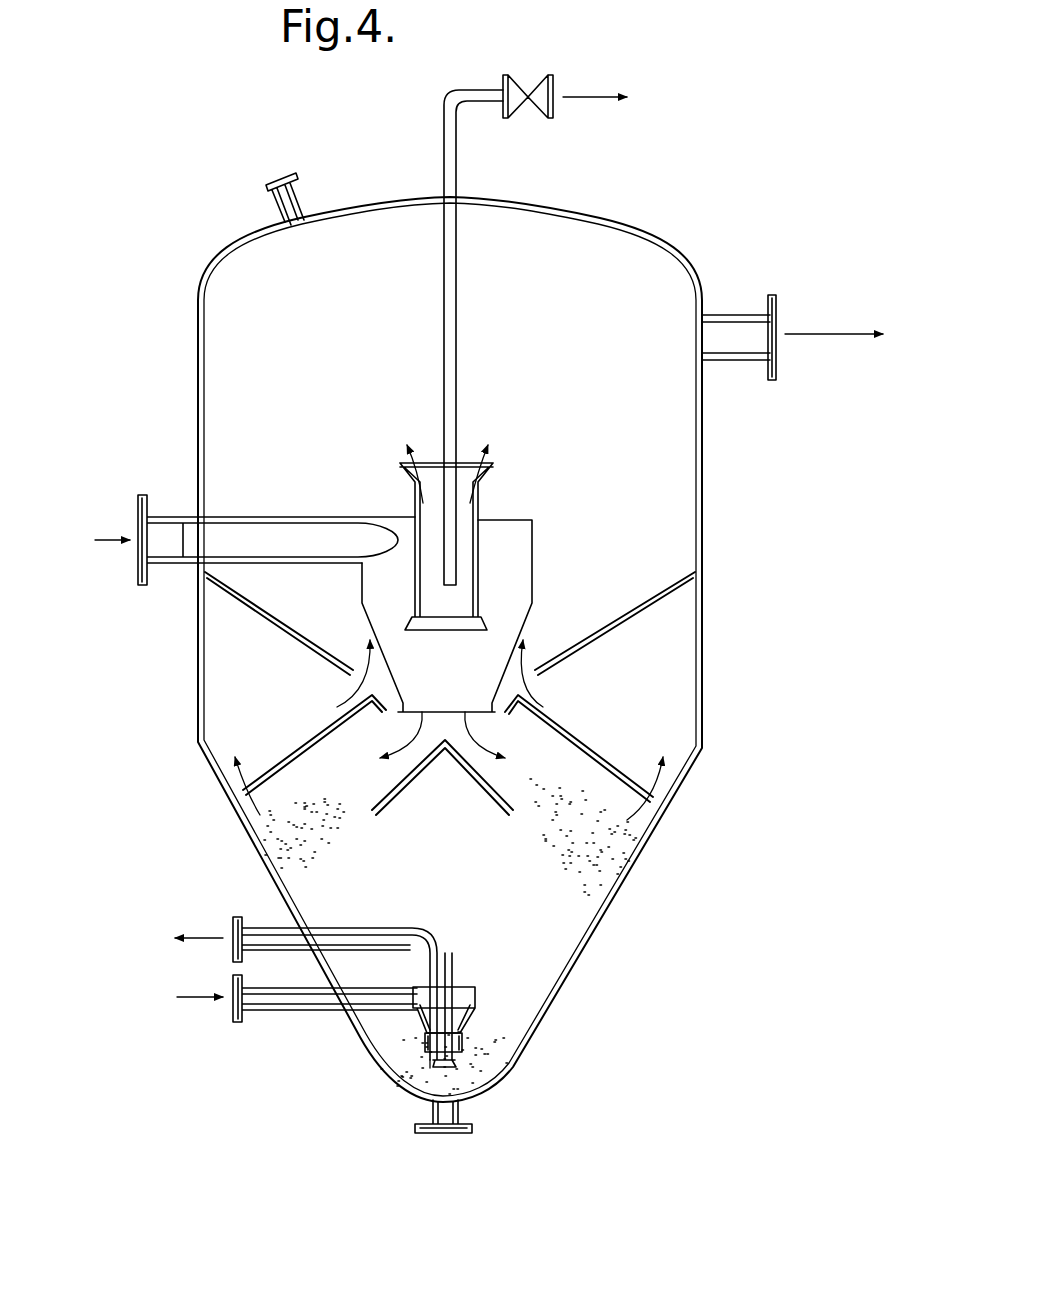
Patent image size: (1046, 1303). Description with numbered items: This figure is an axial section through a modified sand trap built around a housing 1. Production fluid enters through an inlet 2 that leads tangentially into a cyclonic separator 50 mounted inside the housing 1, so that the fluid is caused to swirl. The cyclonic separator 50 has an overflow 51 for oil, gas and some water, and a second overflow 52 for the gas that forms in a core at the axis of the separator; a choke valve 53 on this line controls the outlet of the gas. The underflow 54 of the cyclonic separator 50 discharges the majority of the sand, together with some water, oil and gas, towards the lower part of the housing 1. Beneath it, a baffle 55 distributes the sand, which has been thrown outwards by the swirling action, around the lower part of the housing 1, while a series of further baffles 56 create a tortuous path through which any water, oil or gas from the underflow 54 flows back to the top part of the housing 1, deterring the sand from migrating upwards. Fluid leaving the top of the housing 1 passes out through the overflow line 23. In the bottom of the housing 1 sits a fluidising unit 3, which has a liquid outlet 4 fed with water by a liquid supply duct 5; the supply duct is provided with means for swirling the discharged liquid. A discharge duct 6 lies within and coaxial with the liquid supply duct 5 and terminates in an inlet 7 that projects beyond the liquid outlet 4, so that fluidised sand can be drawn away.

The housing 1 is at (702, 508).
The inlet 2 is at (137, 517).
The fluidising unit 3 is at (477, 1003).
The liquid outlet 4 is at (460, 1050).
The liquid supply duct 5 is at (287, 1010).
The discharge duct 6 is at (257, 930).
The inlet 7 is at (433, 1065).
The overflow line 23 is at (735, 313).
The cyclonic separator 50 is at (532, 545).
The overflow 51 is at (490, 472).
The second overflow 52 is at (458, 270).
The choke valve 53 is at (517, 80).
The underflow 54 is at (492, 712).
The baffle 55 is at (490, 790).
The further baffles 56 is at (625, 618).